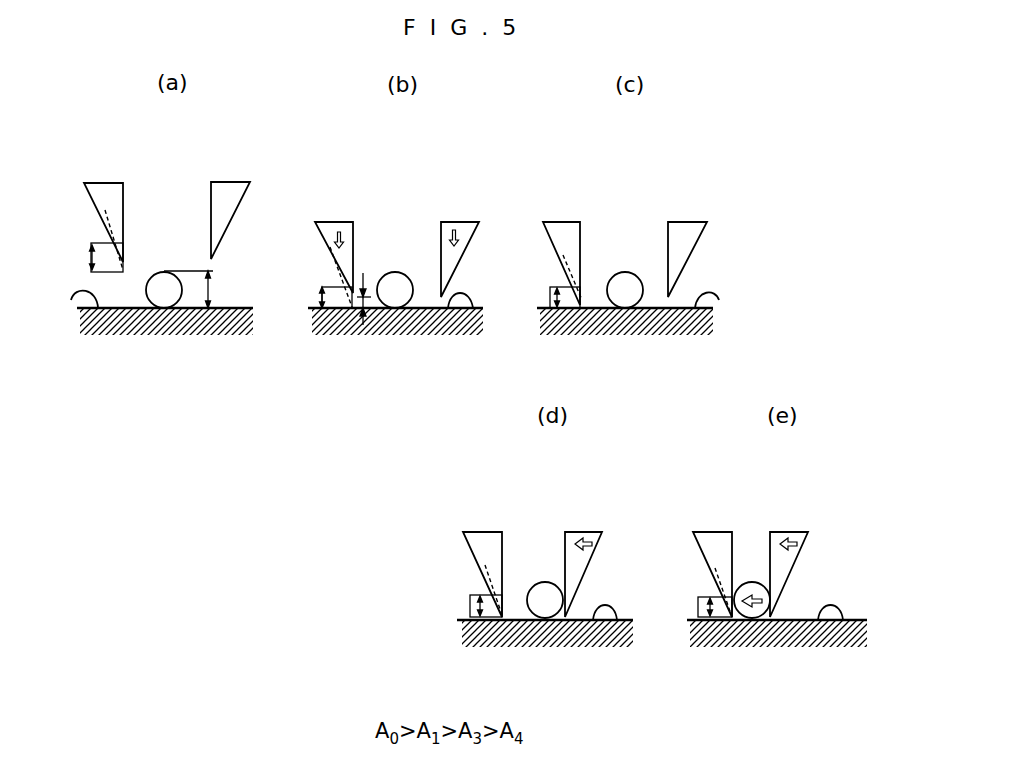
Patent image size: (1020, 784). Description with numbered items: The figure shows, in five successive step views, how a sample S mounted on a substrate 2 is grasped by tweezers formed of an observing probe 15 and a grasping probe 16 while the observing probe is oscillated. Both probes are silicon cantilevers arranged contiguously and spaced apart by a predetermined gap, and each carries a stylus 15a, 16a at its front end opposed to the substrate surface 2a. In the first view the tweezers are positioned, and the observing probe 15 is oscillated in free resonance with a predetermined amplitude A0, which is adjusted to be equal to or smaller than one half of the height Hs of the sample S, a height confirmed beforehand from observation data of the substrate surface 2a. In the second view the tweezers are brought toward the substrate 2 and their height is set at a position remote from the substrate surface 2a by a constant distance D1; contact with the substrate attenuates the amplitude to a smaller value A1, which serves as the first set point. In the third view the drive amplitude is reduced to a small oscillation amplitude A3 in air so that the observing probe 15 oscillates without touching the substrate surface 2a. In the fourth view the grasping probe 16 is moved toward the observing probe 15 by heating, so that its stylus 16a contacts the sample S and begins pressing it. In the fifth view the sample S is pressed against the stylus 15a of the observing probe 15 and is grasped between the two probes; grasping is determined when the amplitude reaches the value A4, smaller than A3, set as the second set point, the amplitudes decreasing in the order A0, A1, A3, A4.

The substrate 2 is at (127, 320).
The substrate surface 2a is at (71, 300).
The observing probe 15 is at (122, 181).
The stylus of observing probe 15a is at (101, 183).
The grasping probe 16 is at (245, 181).
The stylus of grasping probe 16a is at (223, 185).
The sample S is at (167, 275).
The height of the sample Hs is at (205, 289).
The predetermined amplitude A0 is at (89, 256).
The first attenuated value A1 is at (320, 298).
The reset amplitude A3 is at (550, 298).
The grasping amplitude A4 is at (698, 606).
The constant distance D1 is at (363, 325).